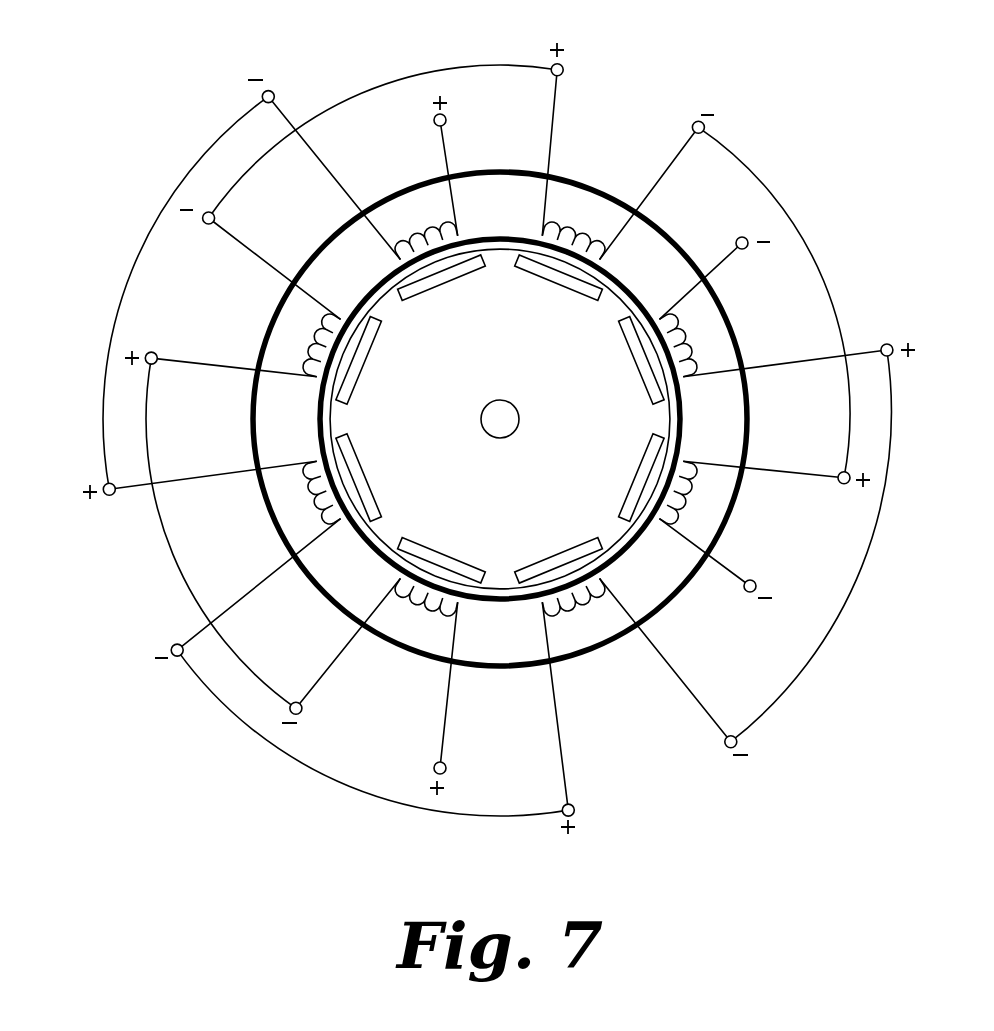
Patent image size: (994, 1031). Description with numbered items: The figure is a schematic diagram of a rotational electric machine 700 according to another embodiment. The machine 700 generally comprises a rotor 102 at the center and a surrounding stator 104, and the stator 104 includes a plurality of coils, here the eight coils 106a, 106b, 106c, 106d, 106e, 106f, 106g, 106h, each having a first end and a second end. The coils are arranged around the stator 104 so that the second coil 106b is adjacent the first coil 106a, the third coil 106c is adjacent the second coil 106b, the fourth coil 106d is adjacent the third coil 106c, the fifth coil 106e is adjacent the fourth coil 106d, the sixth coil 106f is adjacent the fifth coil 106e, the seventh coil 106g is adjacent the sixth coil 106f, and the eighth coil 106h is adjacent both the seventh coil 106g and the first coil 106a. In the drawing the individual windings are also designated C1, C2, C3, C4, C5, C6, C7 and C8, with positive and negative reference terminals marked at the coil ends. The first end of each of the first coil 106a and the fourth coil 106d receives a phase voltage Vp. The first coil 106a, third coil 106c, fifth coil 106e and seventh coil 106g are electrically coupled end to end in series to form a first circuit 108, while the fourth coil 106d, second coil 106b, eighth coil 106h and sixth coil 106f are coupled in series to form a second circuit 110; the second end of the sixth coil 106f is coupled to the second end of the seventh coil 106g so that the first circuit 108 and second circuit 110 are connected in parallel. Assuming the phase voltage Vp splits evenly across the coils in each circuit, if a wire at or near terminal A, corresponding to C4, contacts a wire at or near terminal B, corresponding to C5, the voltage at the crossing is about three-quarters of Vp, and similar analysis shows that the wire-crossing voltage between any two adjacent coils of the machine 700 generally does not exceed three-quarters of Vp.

The rotational electric machine 700 is at (776, 55).
The rotor 102 is at (426, 491).
The stator 104 is at (496, 170).
The first coil 106a is at (495, 220).
The second coil 106b is at (339, 316).
The third coil 106c is at (320, 452).
The fourth coil 106d is at (391, 577).
The fifth coil 106e is at (513, 603).
The sixth coil 106f is at (657, 540).
The seventh coil 106g is at (684, 381).
The eighth coil 106h is at (601, 259).
The first circuit 108 is at (127, 273).
The second circuit 110 is at (796, 228).
The coil C1 is at (426, 228).
The coil C2 is at (309, 345).
The coil C3 is at (308, 492).
The coil C4 is at (426, 613).
The coil C5 is at (573, 613).
The coil C6 is at (690, 492).
The coil C7 is at (690, 345).
The coil C8 is at (573, 228).
The terminal A is at (435, 764).
The terminal B is at (727, 748).
The phase voltage Vp is at (441, 451).